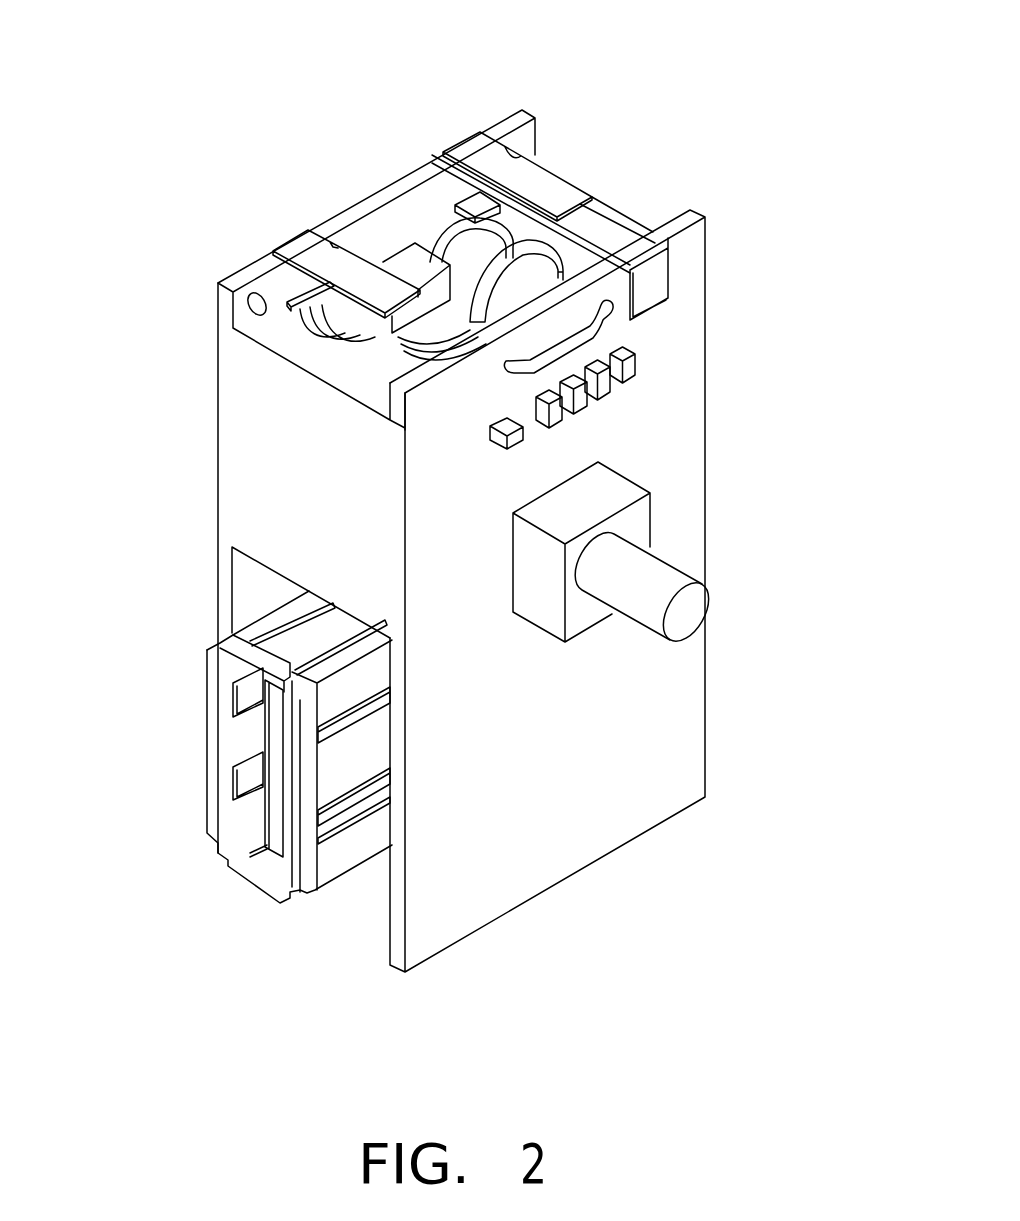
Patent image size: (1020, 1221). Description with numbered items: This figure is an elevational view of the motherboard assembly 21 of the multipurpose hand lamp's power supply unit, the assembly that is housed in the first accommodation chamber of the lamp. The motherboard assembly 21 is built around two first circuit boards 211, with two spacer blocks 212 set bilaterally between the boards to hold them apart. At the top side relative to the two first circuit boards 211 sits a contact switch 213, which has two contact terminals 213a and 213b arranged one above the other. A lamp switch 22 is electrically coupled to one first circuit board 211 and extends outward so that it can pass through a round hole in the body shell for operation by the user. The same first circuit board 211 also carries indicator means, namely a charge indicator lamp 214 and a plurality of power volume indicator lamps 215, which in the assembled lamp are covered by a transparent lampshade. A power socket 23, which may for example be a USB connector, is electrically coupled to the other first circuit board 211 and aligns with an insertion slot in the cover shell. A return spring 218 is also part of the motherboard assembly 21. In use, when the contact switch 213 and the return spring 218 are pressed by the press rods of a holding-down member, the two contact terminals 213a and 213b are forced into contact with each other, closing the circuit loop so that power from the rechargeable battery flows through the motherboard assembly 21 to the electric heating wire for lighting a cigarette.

The motherboard assembly 21 is at (476, 499).
The first circuit board 211 is at (685, 357).
The spacer block 212 is at (249, 416).
The contact switch 213 is at (626, 173).
The contact terminal 213a is at (553, 190).
The contact terminal 213b is at (617, 222).
The charge indicator lamp 214 is at (507, 443).
The power volume indicator lamps 215 is at (553, 438).
The return spring 218 is at (345, 273).
The lamp switch 22 is at (658, 575).
The power socket 23 is at (253, 721).